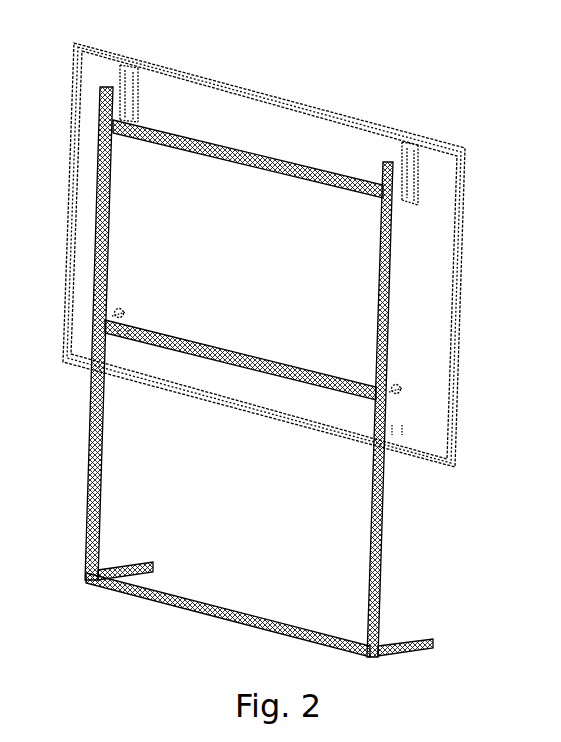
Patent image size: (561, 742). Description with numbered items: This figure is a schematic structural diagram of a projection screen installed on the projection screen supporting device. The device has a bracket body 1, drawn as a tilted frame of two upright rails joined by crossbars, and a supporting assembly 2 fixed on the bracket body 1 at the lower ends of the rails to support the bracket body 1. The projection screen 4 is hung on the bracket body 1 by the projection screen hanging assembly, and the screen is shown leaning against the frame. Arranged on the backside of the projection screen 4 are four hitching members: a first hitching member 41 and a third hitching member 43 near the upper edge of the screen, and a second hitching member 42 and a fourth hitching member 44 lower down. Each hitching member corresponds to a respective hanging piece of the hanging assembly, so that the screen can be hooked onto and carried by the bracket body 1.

The bracket body 1 is at (96, 441).
The supporting assembly 2 is at (396, 644).
The projection screen 4 is at (462, 228).
The first hitching member 41 is at (418, 150).
The second hitching member 42 is at (399, 387).
The third hitching member 43 is at (133, 87).
The fourth hitching member 44 is at (122, 311).